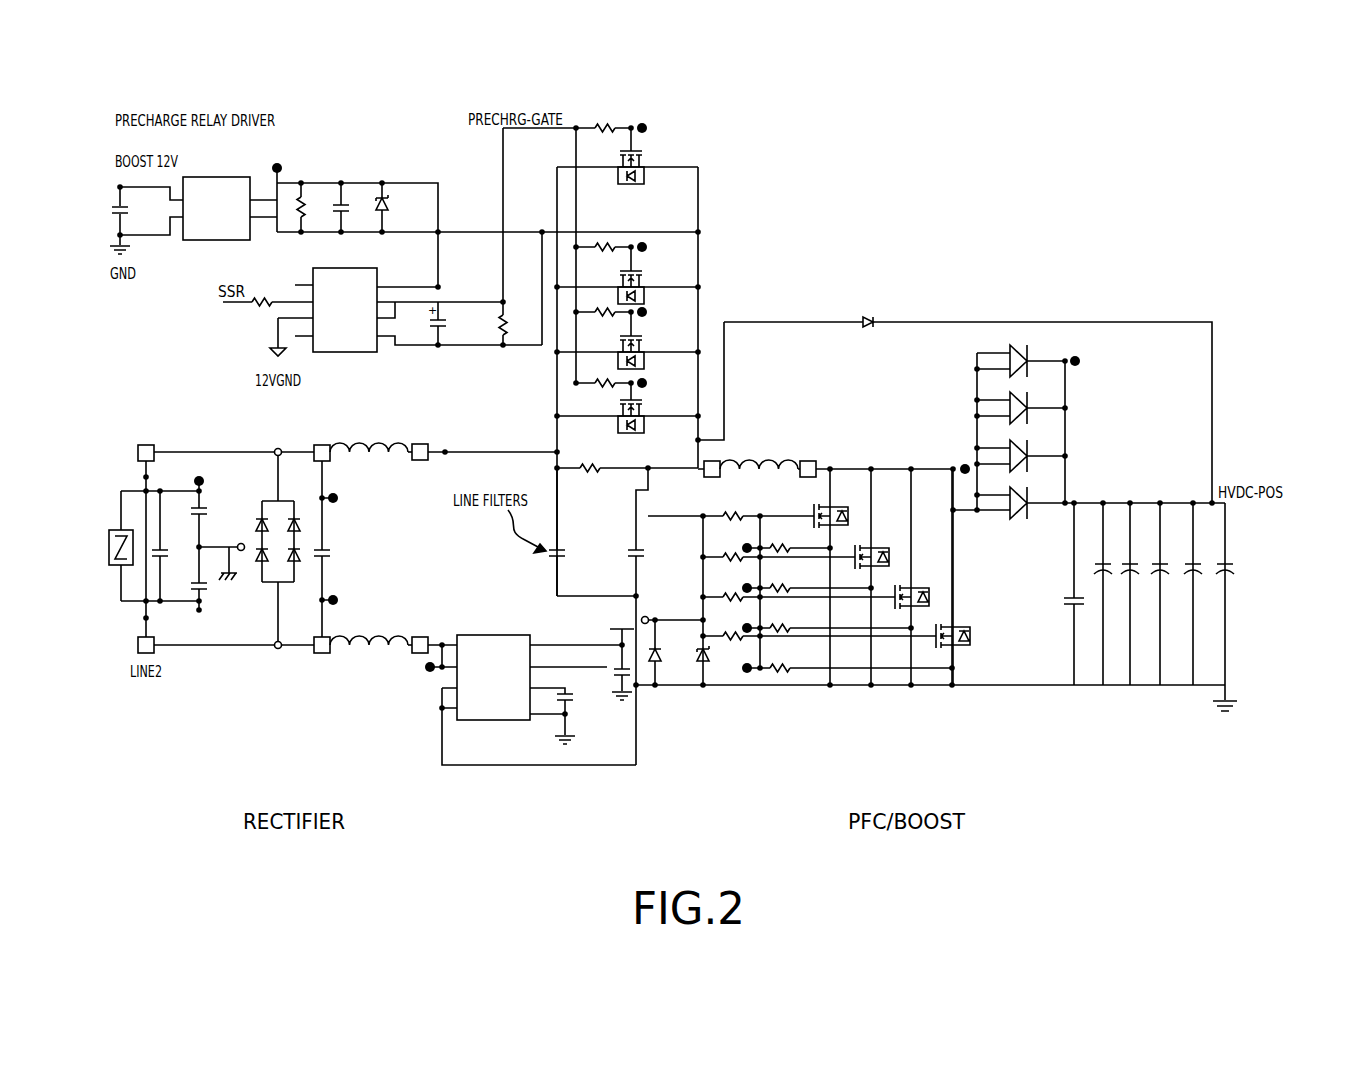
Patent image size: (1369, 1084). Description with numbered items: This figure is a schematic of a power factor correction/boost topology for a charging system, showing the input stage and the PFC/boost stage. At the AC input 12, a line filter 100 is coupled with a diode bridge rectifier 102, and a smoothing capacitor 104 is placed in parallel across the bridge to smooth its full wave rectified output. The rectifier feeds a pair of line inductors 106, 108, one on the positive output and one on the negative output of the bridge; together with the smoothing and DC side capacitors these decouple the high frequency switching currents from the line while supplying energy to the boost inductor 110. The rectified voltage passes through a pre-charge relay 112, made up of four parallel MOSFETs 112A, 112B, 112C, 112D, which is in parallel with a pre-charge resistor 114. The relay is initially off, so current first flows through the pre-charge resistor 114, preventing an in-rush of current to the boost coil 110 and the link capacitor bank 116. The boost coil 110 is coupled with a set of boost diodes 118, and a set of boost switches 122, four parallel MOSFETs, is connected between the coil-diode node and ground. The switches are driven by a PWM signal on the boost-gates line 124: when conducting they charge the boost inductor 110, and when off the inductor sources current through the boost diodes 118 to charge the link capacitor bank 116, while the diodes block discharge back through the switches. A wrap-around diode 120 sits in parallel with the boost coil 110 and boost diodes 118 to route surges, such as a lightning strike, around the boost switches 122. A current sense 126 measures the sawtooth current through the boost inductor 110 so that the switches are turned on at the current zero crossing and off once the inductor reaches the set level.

The line filter 100 is at (180, 488).
The AC input 12 is at (278, 431).
The line inductor 106 is at (398, 447).
The smoothing capacitor 104 is at (338, 554).
The diode bridge rectifier 102 is at (293, 590).
The line inductor 108 is at (380, 643).
The current sense 126 is at (514, 723).
The pre-charge resistor 114 is at (590, 472).
The boost-gates line 124 is at (656, 524).
The boost inductor 110 is at (772, 460).
The pre-charge relay 112 is at (663, 359).
The MOSFET 112A is at (690, 196).
The MOSFET 112B is at (690, 317).
The MOSFET 112C is at (690, 377).
The MOSFET 112D is at (690, 442).
The wrap-around diode 120 is at (872, 318).
The boost diodes 118 is at (1080, 431).
The boost switches 122 is at (962, 615).
The link capacitor bank 116 is at (1240, 664).